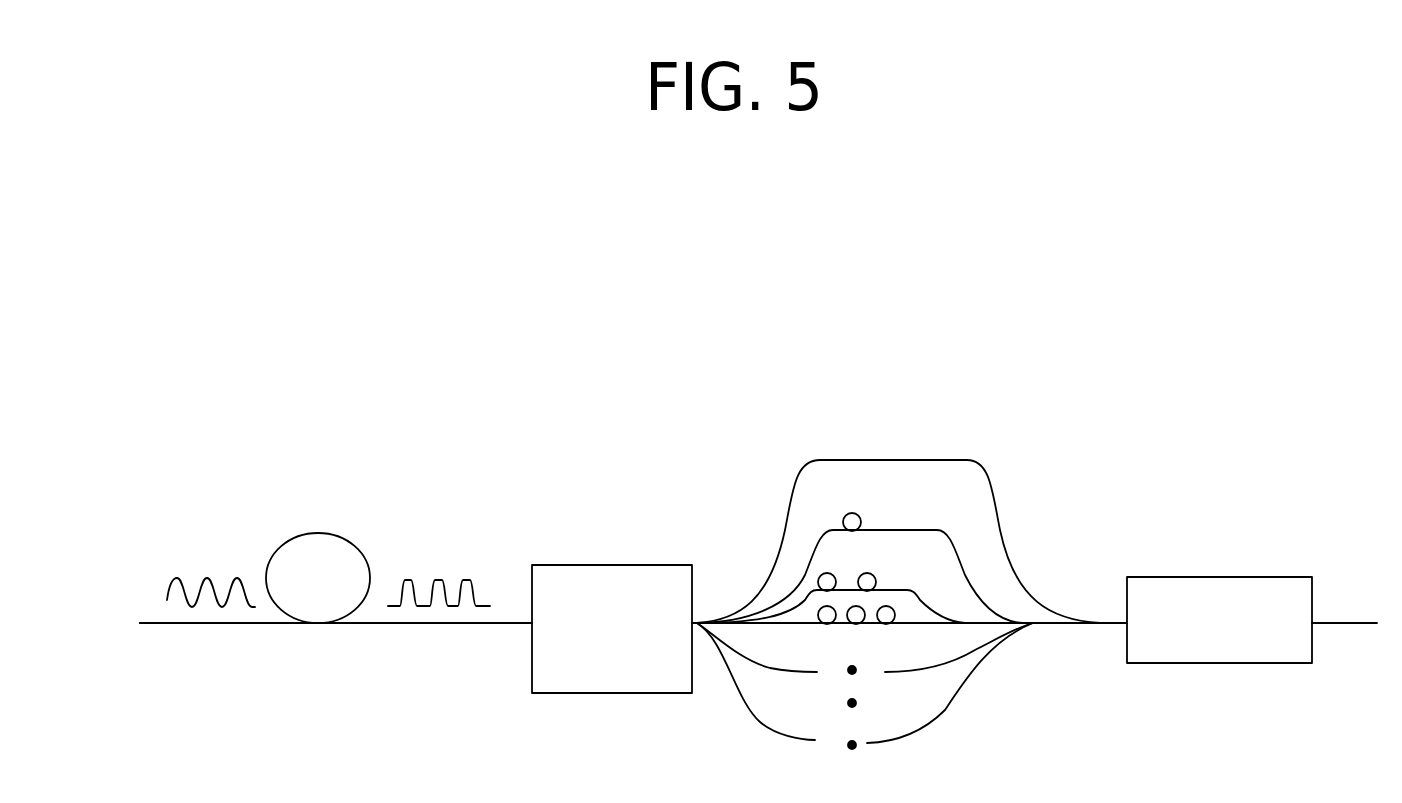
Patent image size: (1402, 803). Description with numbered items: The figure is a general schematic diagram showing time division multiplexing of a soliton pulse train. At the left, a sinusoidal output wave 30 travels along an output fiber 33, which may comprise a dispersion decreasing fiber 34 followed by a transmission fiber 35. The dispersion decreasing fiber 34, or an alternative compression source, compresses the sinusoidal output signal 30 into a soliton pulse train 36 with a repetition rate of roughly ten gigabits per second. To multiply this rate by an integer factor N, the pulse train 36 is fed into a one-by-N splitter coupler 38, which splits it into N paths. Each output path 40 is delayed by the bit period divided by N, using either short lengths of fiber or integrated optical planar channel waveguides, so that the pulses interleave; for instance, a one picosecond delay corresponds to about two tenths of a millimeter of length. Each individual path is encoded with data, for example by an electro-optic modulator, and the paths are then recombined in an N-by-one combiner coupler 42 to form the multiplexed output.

The sinusoidal output wave 30 is at (207, 578).
The output fiber 33 is at (306, 668).
The dispersion decreasing fiber 34 is at (335, 535).
The transmission fiber 35 is at (445, 623).
The soliton pulse train 36 is at (467, 580).
The 1×N coupler 38 is at (648, 565).
The output path 40 is at (947, 460).
The N×1 coupler 42 is at (1178, 577).